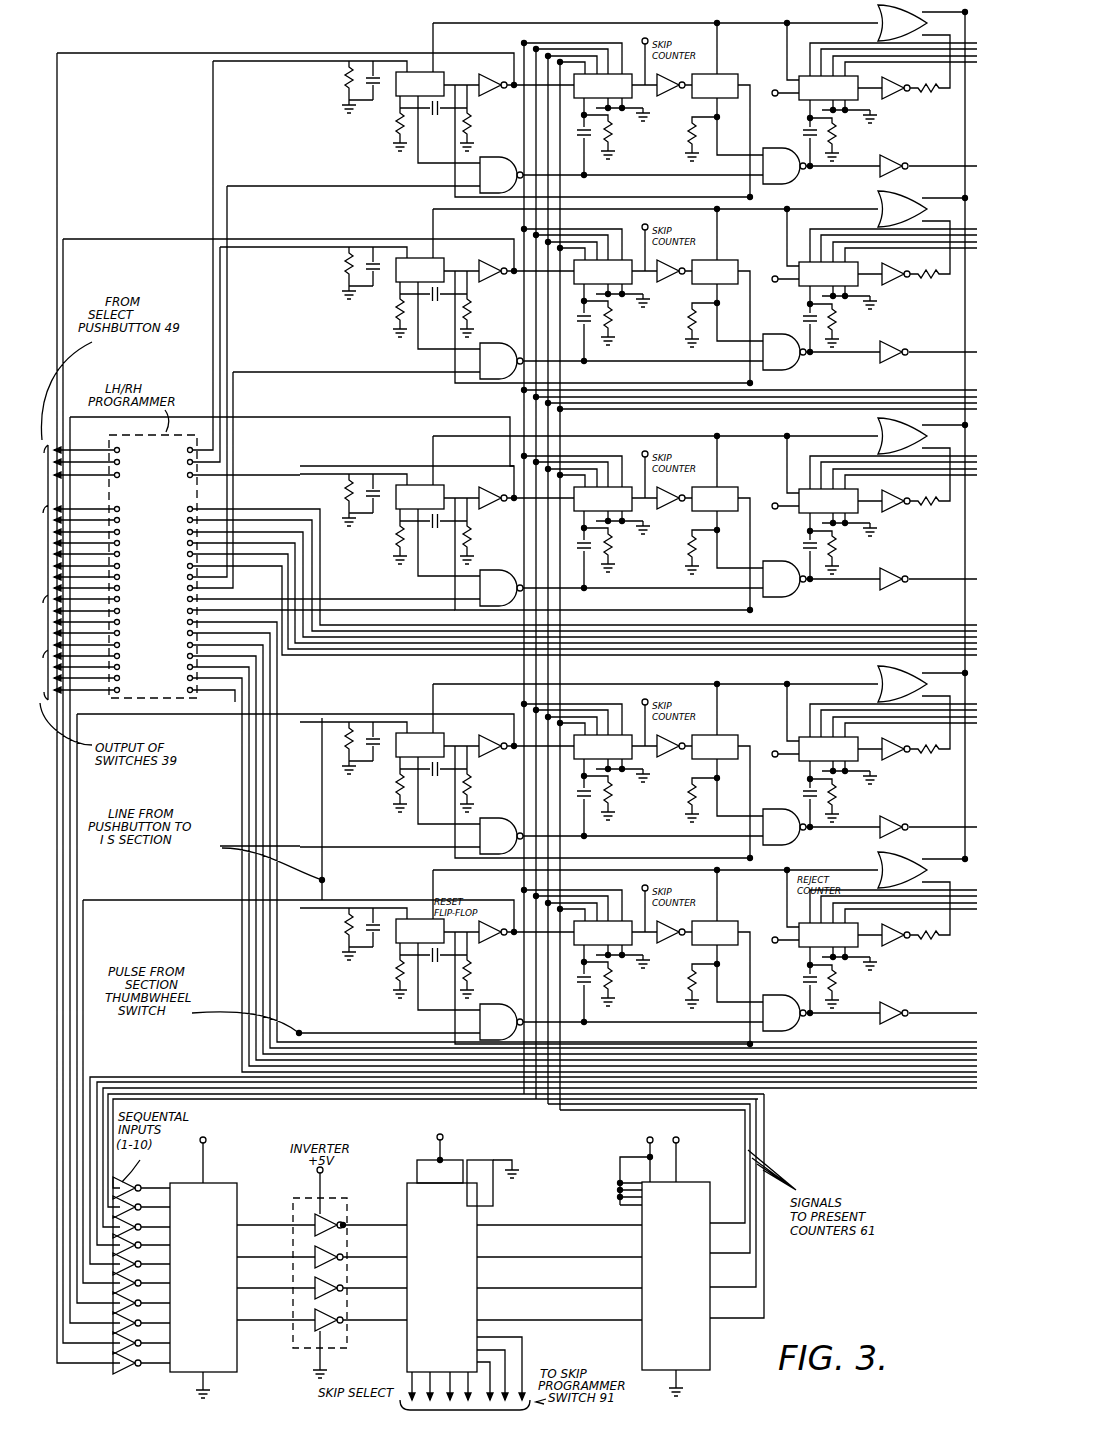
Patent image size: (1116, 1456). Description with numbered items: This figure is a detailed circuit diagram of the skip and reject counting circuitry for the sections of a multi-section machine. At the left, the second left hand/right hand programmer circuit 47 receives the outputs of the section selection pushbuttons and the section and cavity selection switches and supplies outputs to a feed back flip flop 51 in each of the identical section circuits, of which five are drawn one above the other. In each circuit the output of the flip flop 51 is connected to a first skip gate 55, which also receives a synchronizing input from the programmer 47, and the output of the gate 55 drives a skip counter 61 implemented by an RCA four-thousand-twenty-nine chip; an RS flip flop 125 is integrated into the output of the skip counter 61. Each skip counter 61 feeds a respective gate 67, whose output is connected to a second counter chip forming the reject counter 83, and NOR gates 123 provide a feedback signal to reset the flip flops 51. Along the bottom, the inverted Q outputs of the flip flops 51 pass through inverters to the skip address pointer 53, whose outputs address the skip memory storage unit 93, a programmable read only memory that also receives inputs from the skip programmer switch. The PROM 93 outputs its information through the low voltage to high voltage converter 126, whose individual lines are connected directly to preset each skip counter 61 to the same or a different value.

The second left hand/right hand programmer circuit 47 is at (125, 566).
The flip flop 51 is at (420, 507).
The skip address pointer circuit 53 is at (214, 1258).
The first skip gate 55 is at (501, 598).
The skip counter 61 is at (603, 509).
The gate 67 is at (784, 589).
The reject counter 83 is at (828, 511).
The skip memory storage unit 93 is at (520, 1264).
The NOR gate 123 is at (902, 446).
The RS flip flop 125 is at (715, 509).
The low voltage to high voltage converter 126 is at (665, 1258).